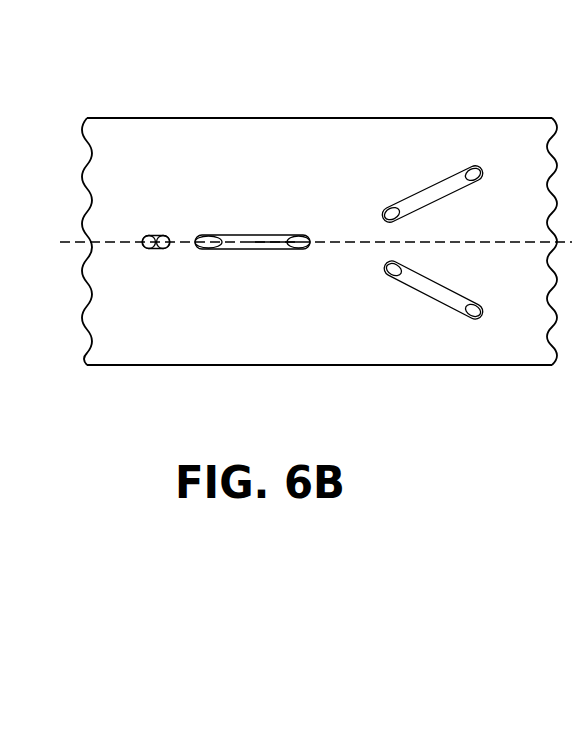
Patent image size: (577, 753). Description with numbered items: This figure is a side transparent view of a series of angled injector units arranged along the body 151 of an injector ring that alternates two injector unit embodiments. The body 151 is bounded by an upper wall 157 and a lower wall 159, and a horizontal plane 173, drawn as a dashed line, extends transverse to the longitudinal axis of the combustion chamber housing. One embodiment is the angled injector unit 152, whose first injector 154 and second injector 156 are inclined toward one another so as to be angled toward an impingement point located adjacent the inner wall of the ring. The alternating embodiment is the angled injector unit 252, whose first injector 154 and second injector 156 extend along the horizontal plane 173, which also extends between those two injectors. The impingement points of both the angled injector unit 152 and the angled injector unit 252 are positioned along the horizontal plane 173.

The body 151 is at (319, 230).
The angled injector unit 152 is at (444, 152).
The first injector 154 is at (153, 249).
The second injector 156 is at (257, 240).
The upper wall 157 is at (358, 118).
The lower wall 159 is at (475, 365).
The horizontal plane 173 is at (74, 243).
The angled injector unit 252 is at (284, 205).